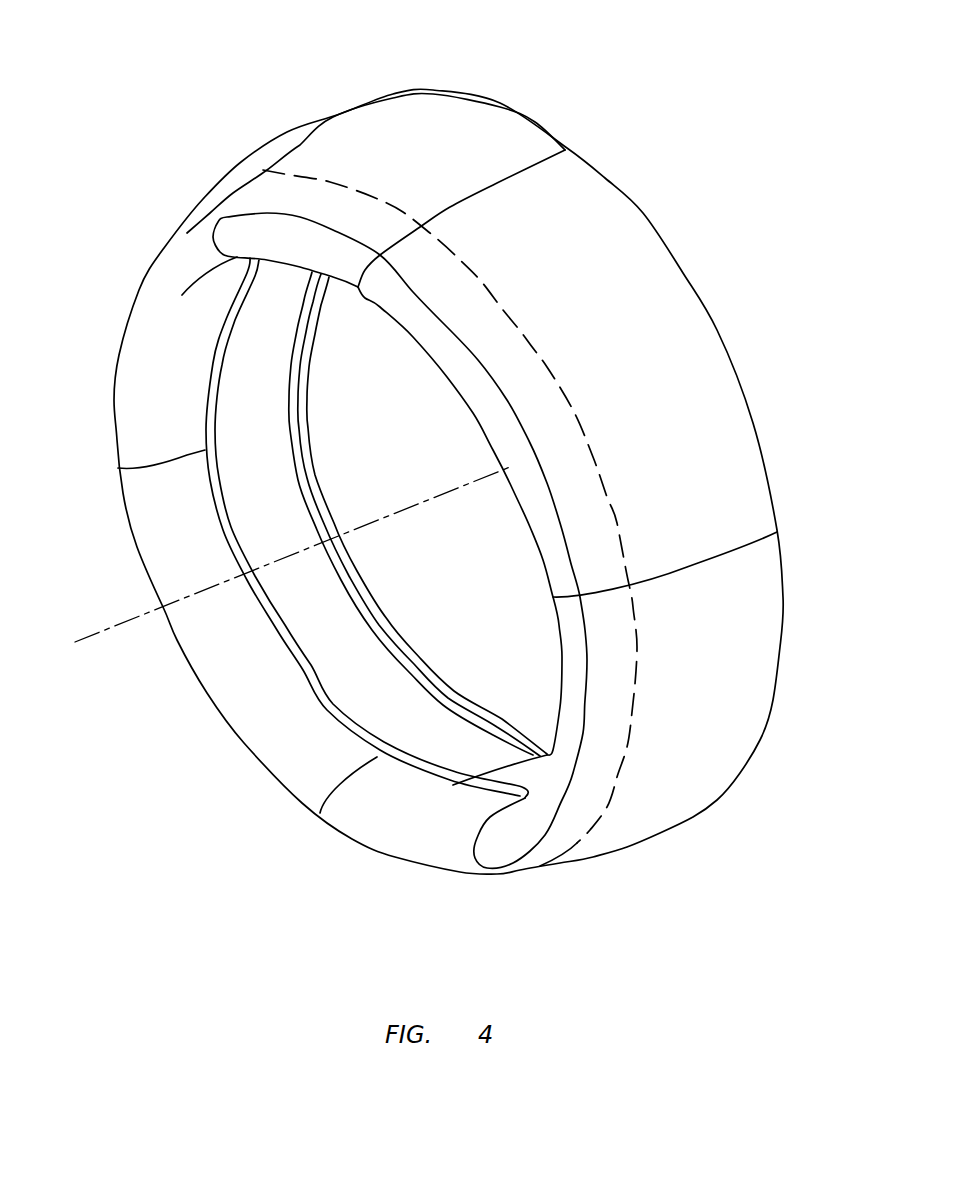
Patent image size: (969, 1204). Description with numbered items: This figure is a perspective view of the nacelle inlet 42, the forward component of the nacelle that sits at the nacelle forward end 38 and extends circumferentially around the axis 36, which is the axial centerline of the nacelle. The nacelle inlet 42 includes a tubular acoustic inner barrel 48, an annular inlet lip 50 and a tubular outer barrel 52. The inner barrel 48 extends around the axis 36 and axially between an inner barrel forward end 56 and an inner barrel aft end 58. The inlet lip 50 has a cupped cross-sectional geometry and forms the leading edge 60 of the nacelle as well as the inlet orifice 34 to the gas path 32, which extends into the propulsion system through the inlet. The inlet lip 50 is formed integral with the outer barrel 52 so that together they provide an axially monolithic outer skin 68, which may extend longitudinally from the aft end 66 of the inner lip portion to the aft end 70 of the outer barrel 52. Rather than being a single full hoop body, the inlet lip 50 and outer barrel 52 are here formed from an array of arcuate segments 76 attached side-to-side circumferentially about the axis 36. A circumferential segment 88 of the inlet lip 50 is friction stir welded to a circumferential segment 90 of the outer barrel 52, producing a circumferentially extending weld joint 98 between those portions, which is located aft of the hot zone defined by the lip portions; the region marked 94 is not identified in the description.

The gas path 32 is at (455, 598).
The inlet orifice 34 is at (277, 722).
The axis 36 is at (108, 638).
The nacelle forward end 38 is at (297, 802).
The nacelle inlet 42 is at (148, 125).
The inner barrel 48 is at (287, 498).
The inlet lip 50 is at (143, 547).
The outer barrel 52 is at (567, 197).
The inner barrel forward end 56 is at (413, 775).
The inner barrel aft end 58 is at (460, 698).
The leading edge 60 is at (123, 400).
The aft end of the inner lip portion 66 is at (437, 780).
The outer skin 68 is at (313, 162).
The aft end of the outer barrel 70 is at (548, 127).
The arcuate segments 76 is at (518, 137).
The circumferential segment of the inlet lip 88 is at (593, 523).
The circumferential segment of the outer barrel 90 is at (717, 435).
The peripheral segment 94 is at (608, 253).
The weld joint 98 is at (556, 382).